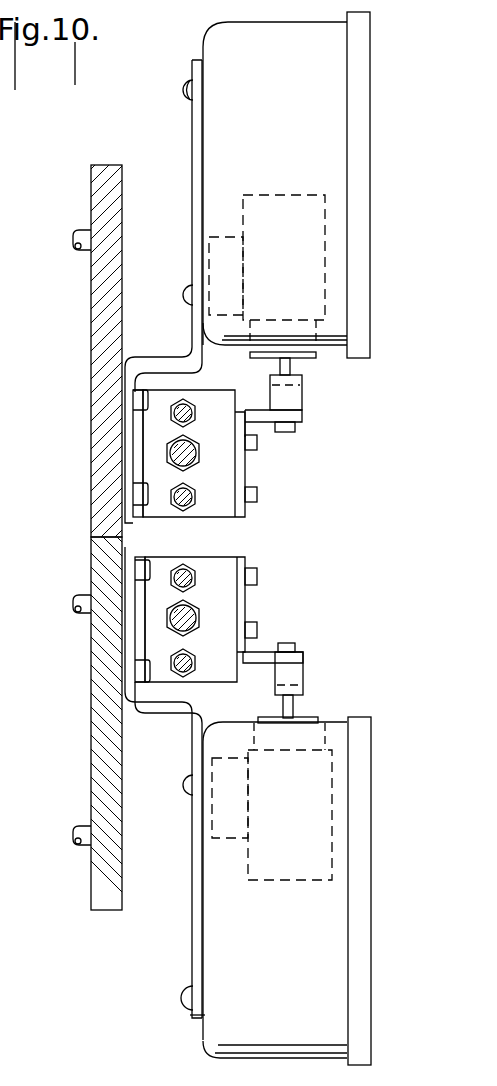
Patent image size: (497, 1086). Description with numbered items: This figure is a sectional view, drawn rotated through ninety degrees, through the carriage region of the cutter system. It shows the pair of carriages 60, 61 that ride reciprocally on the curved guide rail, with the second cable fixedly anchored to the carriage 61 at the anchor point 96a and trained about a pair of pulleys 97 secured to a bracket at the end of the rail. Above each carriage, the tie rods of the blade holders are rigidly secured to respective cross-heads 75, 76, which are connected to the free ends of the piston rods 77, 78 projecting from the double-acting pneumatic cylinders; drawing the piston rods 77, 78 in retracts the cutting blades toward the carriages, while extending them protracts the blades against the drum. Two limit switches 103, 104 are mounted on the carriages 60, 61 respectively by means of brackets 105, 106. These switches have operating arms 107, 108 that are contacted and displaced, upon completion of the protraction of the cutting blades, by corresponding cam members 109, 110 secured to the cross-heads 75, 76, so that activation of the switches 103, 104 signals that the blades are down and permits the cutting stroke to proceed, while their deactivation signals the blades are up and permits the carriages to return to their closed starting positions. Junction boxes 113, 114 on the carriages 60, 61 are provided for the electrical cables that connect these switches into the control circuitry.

The carriage 60 is at (91, 304).
The carriage 61 is at (91, 663).
The cross-head 75 is at (219, 458).
The cross-head 76 is at (220, 613).
The piston rod 77 is at (199, 453).
The piston rod 78 is at (199, 613).
The cable anchor point 96a is at (0, 770).
The pulleys 97 is at (0, 878).
The limit switch 103 is at (325, 200).
The limit switch 104 is at (332, 823).
The bracket 105 is at (192, 142).
The bracket 106 is at (191, 956).
The operating arm 107 is at (288, 371).
The operating arm 108 is at (290, 709).
The cam member 109 is at (294, 405).
The cam member 110 is at (293, 673).
The junction box 113 is at (337, 118).
The junction box 114 is at (332, 961).